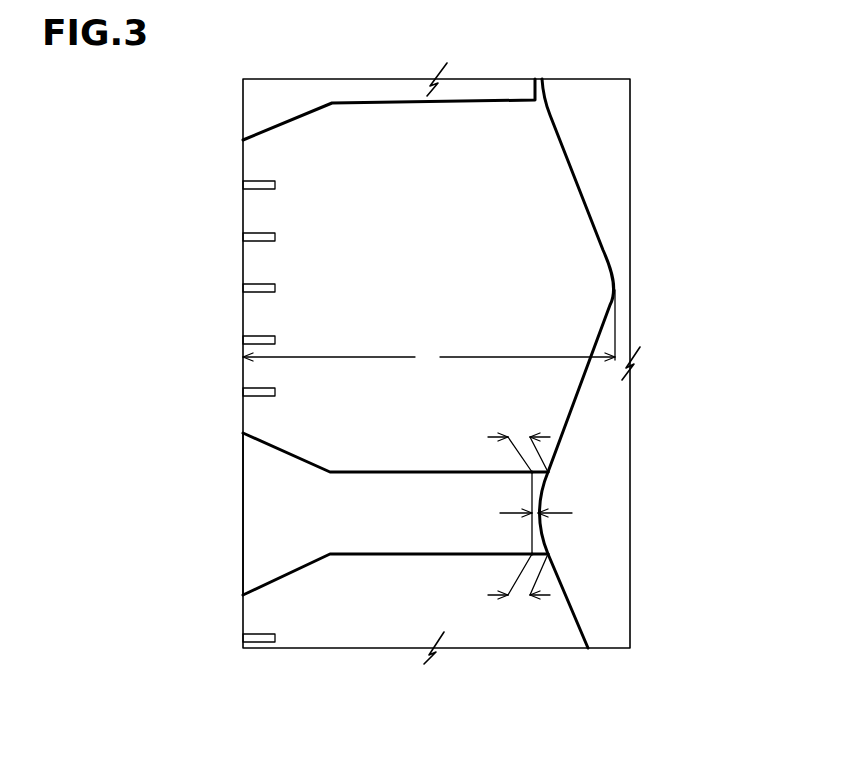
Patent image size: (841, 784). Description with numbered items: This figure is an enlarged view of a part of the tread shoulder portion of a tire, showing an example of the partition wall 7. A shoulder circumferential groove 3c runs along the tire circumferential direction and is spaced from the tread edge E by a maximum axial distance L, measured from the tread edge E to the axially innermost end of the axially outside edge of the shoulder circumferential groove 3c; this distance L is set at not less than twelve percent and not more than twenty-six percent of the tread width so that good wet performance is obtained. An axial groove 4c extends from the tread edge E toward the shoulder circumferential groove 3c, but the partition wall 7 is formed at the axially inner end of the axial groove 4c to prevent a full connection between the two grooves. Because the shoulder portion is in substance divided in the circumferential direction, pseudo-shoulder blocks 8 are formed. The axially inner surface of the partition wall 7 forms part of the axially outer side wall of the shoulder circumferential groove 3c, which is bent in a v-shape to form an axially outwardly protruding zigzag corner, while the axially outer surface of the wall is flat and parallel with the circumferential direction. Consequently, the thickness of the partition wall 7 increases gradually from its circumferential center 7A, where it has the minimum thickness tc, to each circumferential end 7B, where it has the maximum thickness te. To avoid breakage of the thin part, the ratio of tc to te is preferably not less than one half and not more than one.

The shoulder circumferential groove 3c is at (600, 183).
The circumferential center 7A is at (565, 508).
The circumferential ends 7B is at (547, 480).
The pseudo-shoulder block 8 is at (443, 257).
The partition wall 7 is at (522, 497).
The axial groove 4c is at (273, 530).
The tread edge E is at (243, 258).
The maximum axial distance L is at (429, 331).
The minimum thickness tc is at (520, 514).
The maximum thickness te is at (519, 518).